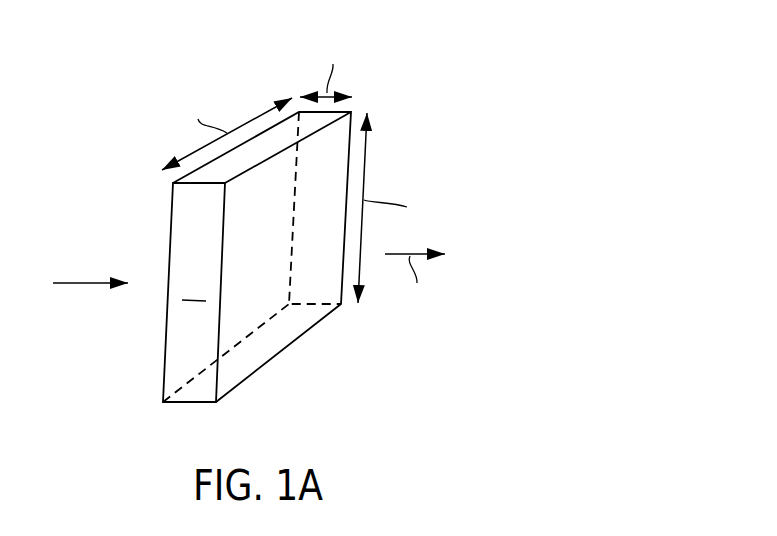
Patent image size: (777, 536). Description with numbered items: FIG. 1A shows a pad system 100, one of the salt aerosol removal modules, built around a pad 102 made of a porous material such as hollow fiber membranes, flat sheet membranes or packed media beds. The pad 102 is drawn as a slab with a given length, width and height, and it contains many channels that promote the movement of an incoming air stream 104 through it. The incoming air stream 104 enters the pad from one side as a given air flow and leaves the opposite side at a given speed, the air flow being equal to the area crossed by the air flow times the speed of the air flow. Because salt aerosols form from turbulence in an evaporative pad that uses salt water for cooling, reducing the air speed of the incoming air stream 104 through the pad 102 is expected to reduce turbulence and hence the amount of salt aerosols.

The pad system 100 is at (563, 38).
The pad 102 is at (277, 348).
The incoming air stream 104 is at (90, 285).